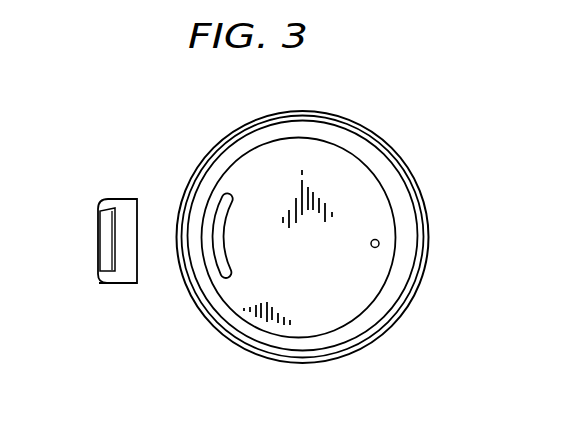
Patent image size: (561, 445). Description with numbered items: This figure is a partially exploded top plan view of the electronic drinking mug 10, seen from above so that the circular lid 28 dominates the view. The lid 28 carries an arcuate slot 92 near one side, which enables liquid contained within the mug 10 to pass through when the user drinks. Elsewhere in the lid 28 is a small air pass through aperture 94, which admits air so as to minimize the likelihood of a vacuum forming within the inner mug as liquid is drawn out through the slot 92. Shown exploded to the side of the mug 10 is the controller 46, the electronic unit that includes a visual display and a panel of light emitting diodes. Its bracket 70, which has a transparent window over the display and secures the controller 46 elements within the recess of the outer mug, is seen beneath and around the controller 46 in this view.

The electronic drinking mug 10 is at (144, 117).
The lid 28 is at (386, 155).
The controller 46 is at (98, 246).
The bracket 70 is at (117, 284).
The slot 92 is at (213, 263).
The air pass through aperture 94 is at (378, 240).